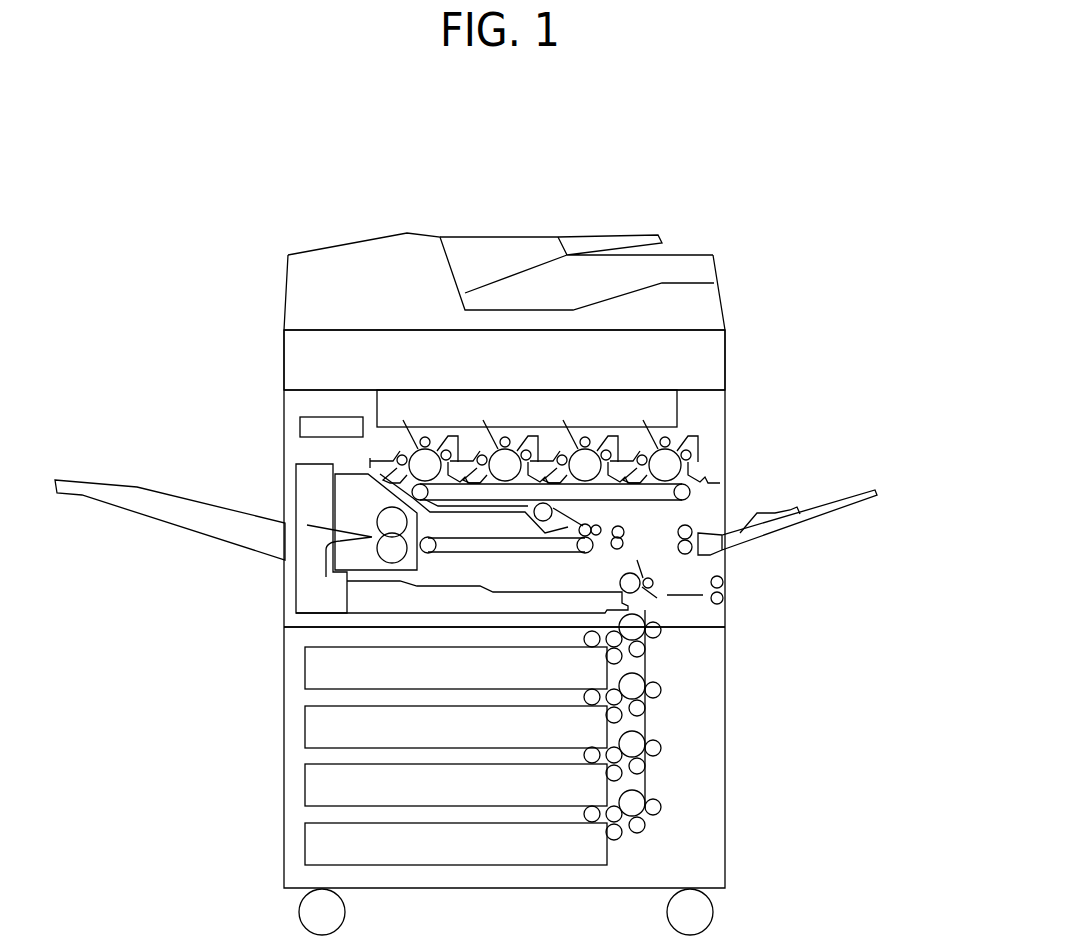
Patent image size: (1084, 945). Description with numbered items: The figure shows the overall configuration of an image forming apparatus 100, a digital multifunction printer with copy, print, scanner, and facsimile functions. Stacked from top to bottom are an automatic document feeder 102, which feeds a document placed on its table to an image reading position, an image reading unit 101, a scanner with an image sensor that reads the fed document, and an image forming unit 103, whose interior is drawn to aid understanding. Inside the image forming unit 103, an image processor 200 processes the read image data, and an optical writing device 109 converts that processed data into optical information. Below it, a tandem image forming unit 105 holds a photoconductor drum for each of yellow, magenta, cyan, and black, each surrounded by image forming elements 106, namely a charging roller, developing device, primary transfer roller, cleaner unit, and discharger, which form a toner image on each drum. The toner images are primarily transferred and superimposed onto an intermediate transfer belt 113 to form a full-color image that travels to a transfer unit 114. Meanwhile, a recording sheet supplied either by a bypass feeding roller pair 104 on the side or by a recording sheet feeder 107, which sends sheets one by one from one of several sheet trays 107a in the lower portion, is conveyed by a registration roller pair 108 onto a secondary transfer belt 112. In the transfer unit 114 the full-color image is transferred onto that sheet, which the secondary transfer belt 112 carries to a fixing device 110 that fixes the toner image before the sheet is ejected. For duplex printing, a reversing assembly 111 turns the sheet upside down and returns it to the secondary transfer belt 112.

The image forming apparatus 100 is at (761, 171).
The image reading unit 101 is at (339, 370).
The automatic document feeder 102 is at (339, 307).
The image forming unit 103 is at (895, 390).
The bypass feeding roller pair 104 is at (725, 597).
The tandem image forming unit 105 is at (697, 418).
The image forming elements 106 is at (613, 428).
The recording sheet feeder 107 is at (647, 730).
The sheet trays 107a is at (305, 843).
The registration roller pair 108 is at (653, 583).
The optical writing device 109 is at (377, 407).
The fixing device 110 is at (372, 523).
The reversing assembly 111 is at (368, 592).
The secondary transfer belt 112 is at (468, 552).
The intermediate transfer belt 113 is at (592, 525).
The transfer unit 114 is at (620, 530).
The image processor 200 is at (300, 425).